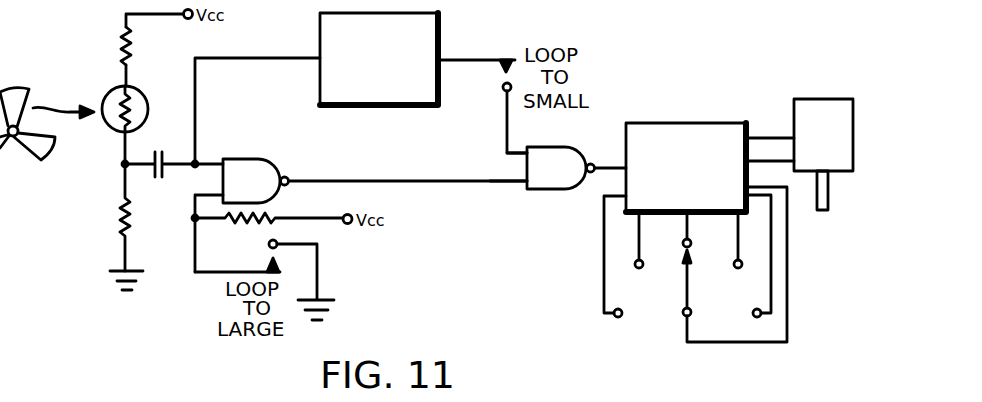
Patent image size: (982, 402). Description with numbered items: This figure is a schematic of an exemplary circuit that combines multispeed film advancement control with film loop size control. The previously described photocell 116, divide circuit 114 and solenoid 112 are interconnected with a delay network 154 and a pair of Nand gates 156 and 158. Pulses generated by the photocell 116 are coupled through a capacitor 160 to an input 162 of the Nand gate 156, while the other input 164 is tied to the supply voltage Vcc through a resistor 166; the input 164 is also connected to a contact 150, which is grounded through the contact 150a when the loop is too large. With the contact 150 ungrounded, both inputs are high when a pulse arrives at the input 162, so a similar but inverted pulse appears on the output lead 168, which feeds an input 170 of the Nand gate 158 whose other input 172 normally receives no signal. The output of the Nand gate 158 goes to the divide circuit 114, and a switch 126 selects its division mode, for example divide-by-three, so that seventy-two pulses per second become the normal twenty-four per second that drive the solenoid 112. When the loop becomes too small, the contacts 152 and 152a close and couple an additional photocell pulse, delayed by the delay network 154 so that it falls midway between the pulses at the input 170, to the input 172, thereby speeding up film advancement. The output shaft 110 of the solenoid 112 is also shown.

The motor shaft 110 is at (830, 210).
The solenoid 112 is at (813, 99).
The divide circuit 114 is at (683, 122).
The photocell 116 is at (108, 92).
The switch 126 is at (684, 291).
The contact 150 is at (268, 262).
The contact 150a is at (276, 242).
The contact 152 is at (497, 63).
The contact 152a is at (503, 92).
The delay network 154 is at (320, 33).
The Nand gate 156 is at (276, 163).
The Nand gate 158 is at (558, 192).
The capacitor 160 is at (152, 151).
The input 162 is at (214, 163).
The input 164 is at (215, 195).
The resistor 166 is at (250, 229).
The output lead 168 is at (408, 168).
The input 170 is at (520, 190).
The input 172 is at (518, 153).